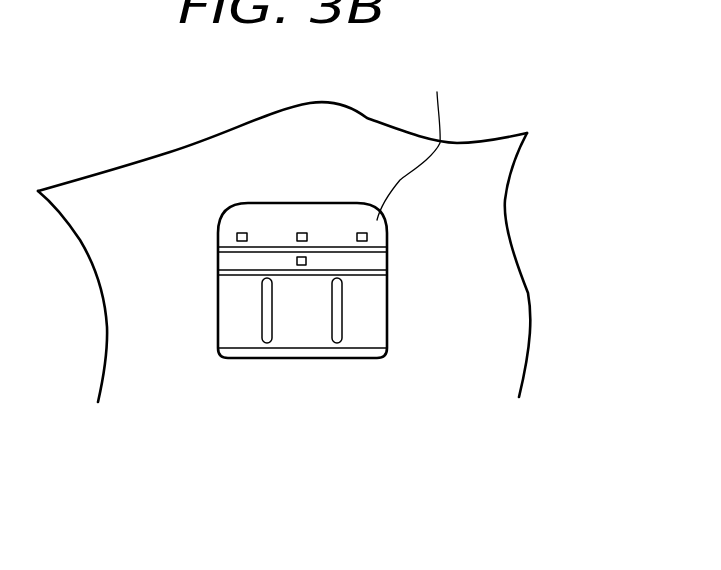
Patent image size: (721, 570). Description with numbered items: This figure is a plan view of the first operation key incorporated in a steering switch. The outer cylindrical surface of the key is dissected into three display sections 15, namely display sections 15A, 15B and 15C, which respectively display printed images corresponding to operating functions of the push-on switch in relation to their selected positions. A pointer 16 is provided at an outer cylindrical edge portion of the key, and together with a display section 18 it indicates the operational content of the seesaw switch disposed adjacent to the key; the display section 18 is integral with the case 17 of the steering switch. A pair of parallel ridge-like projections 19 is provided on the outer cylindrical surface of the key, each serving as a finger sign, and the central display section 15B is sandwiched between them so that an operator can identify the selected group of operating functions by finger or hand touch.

The display sections 15 is at (373, 300).
The display section 15A is at (227, 302).
The display section 15B is at (310, 333).
The display section 15C is at (363, 342).
The pointer 16 is at (300, 266).
The case 17 is at (473, 165).
The display section 18 is at (247, 233).
The ridge-like projections 19 is at (262, 330).